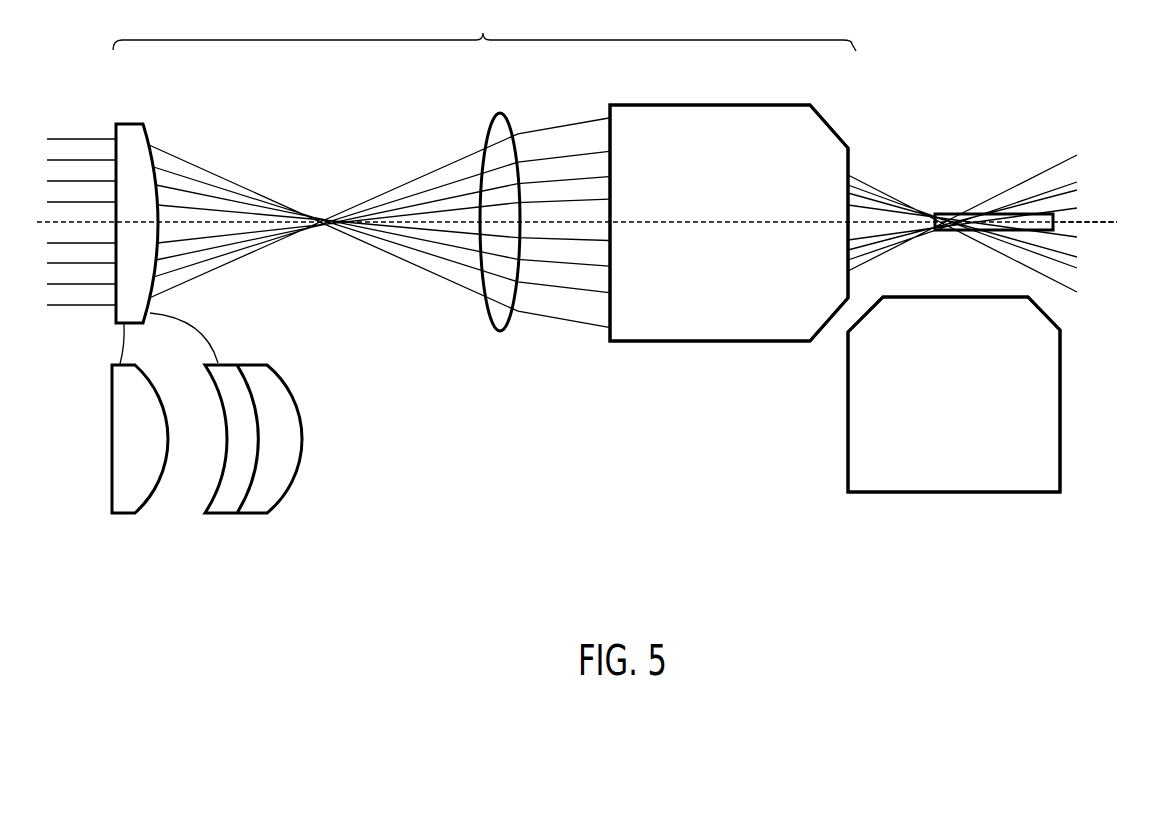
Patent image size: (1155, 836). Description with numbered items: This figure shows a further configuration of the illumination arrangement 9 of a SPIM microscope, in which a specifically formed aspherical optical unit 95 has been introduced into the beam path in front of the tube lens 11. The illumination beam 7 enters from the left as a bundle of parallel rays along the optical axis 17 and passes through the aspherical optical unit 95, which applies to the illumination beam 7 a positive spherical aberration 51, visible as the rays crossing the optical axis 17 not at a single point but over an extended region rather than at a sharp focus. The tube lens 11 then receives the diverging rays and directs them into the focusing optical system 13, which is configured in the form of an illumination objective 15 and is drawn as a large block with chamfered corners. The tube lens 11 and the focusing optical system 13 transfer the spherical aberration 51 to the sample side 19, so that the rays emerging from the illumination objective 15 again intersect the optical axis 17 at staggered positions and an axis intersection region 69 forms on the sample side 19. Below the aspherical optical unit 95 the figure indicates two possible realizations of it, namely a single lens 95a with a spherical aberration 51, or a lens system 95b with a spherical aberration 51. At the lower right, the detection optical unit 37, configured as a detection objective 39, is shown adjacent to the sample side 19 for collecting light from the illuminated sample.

The illumination beam 7 is at (72, 130).
The illumination arrangement 9 is at (484, 27).
The aspherical optical unit 95 is at (128, 122).
The lens with spherical aberration 95a is at (146, 498).
The lens system with spherical aberration 95b is at (272, 512).
The positive spherical aberration 51 is at (338, 203).
The tube lens 11 is at (497, 112).
The focusing optical system 13 is at (705, 115).
The illumination objective 15 is at (729, 223).
The sample side 19 is at (878, 163).
The axis intersection region 69 is at (1022, 214).
The optical axis 17 is at (1096, 230).
The detection optical unit 37 is at (866, 456).
The detection objective 39 is at (954, 394).